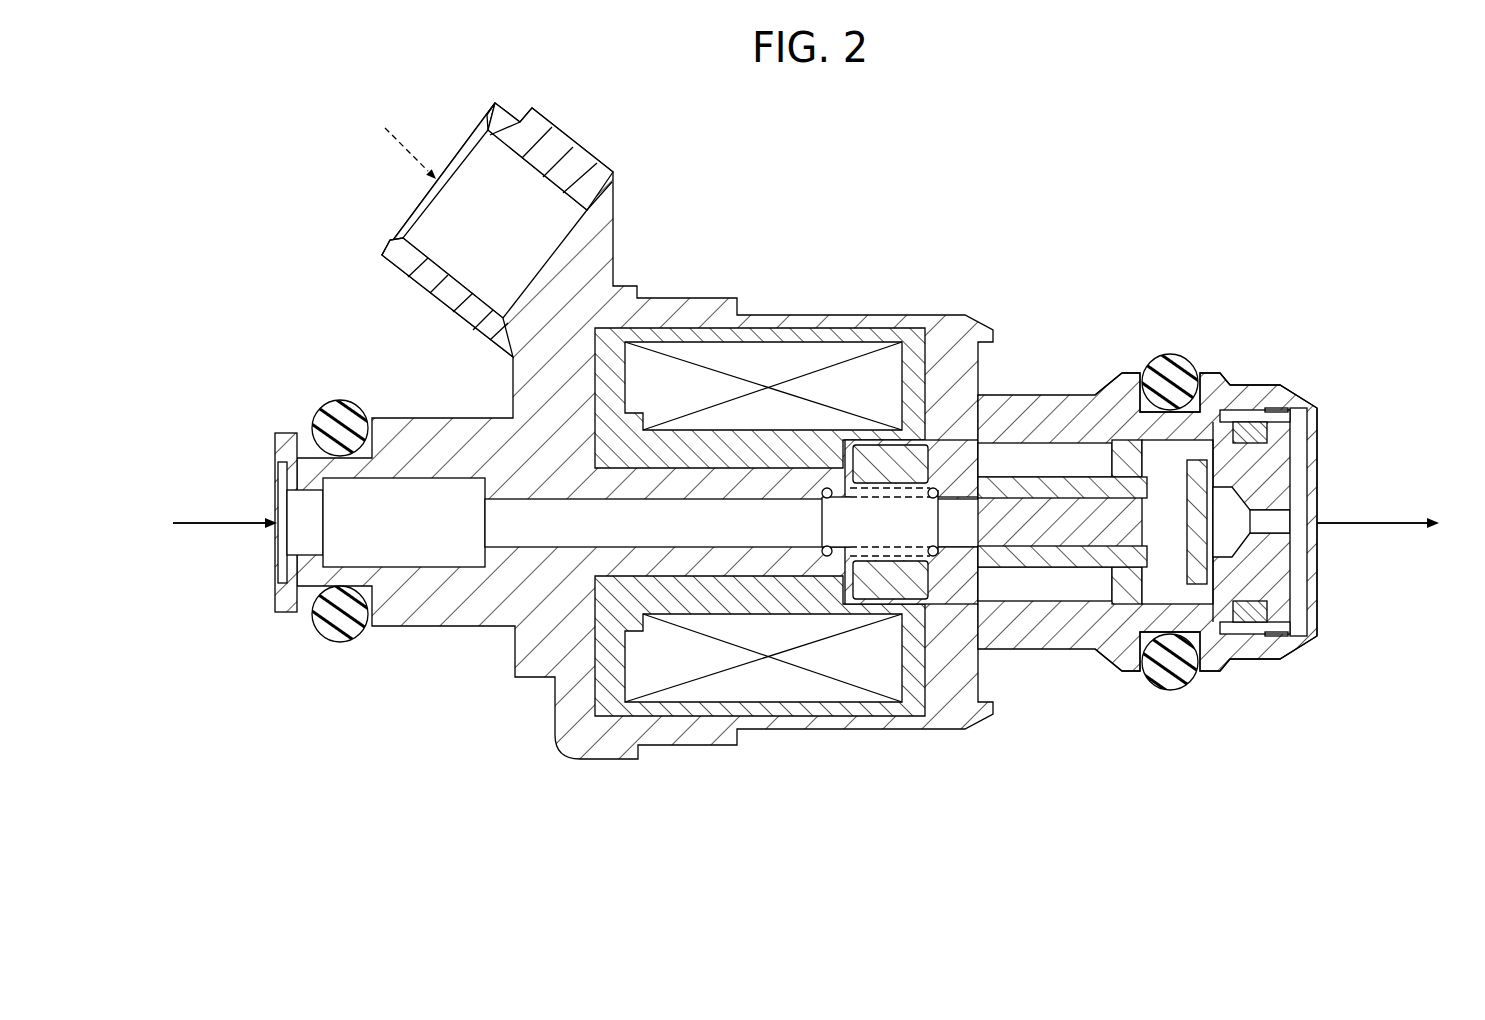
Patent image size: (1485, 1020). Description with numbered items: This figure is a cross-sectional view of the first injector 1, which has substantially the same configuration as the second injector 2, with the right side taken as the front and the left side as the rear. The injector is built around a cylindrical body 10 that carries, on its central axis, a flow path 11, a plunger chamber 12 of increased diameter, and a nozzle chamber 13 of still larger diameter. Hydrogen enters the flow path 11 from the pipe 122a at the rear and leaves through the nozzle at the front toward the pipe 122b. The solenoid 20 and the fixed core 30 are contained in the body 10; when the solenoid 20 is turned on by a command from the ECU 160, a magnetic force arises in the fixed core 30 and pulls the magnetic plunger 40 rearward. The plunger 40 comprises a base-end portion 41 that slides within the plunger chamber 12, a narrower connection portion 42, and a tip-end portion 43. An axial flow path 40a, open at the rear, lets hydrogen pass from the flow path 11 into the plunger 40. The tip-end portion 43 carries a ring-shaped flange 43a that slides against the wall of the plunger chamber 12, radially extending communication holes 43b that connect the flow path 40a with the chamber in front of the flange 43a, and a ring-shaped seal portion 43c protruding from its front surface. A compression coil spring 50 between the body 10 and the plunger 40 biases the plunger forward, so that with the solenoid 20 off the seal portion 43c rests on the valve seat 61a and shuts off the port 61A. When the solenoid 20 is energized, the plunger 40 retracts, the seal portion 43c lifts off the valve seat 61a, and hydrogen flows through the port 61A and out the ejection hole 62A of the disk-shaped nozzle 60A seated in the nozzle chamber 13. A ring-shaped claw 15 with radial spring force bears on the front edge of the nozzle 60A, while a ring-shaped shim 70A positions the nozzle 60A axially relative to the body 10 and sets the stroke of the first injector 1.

The first injector 1 is at (1022, 208).
The second injector 2 is at (799, 442).
The body 10 is at (703, 290).
The flow path 11 is at (541, 535).
The plunger chamber 12 is at (1050, 595).
The nozzle chamber 13 is at (1300, 650).
The claw 15 is at (1288, 430).
The solenoid 20 is at (757, 360).
The fixed core 30 is at (835, 330).
The plunger 40 is at (1013, 468).
The flow path 40a is at (1080, 560).
The base-end portion 41 is at (960, 400).
The connection portion 42 is at (1060, 478).
The tip-end portion 43 is at (1130, 452).
The flange 43a is at (1127, 588).
The communication holes 43b is at (1170, 483).
The seal portion 43c is at (1290, 420).
The compression coil spring 50 is at (925, 465).
The nozzle 60A is at (1295, 458).
The port 61A is at (1230, 513).
The ejection hole 62A is at (1275, 523).
The valve seat 61a is at (1218, 567).
The shim 70A is at (1210, 425).
The pipe 122a is at (205, 530).
The fuel outlet 122b is at (1370, 530).
The ECU 160 is at (371, 136).